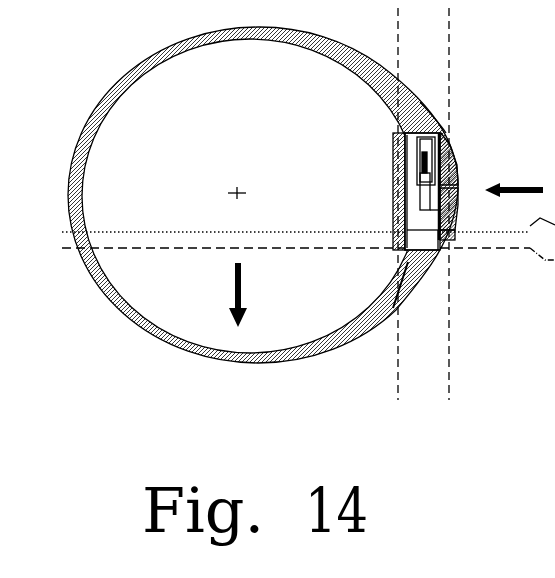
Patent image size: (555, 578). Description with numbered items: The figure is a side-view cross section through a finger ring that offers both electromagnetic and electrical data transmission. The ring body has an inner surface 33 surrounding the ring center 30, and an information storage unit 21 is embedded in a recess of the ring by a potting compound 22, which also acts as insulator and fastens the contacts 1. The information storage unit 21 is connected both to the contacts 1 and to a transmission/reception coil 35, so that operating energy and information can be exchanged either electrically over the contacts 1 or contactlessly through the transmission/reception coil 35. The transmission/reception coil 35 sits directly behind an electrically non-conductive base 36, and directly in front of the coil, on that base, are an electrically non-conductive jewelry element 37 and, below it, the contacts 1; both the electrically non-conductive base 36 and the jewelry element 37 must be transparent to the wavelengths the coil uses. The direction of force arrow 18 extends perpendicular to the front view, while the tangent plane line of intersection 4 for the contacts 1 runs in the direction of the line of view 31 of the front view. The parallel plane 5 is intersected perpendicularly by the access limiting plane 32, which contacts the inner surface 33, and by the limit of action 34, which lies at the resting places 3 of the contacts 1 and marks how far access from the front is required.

The contact 1 is at (457, 197).
The resting place 3 is at (457, 243).
The tangent plane line of intersection 4 is at (308, 265).
The parallel plane 5 is at (308, 216).
The direction of force arrow 18 is at (246, 283).
The information storage unit 21 is at (422, 160).
The potting compound 22 is at (413, 215).
The ring center 30 is at (237, 193).
The line of view 31 is at (513, 178).
The access limiting plane 32 is at (399, 34).
The inner surface 33 is at (333, 70).
The limit of action 34 is at (450, 34).
The transmission/reception coil 35 is at (400, 137).
The electrically non-conductive base 36 is at (448, 131).
The jewelry element 37 is at (452, 150).